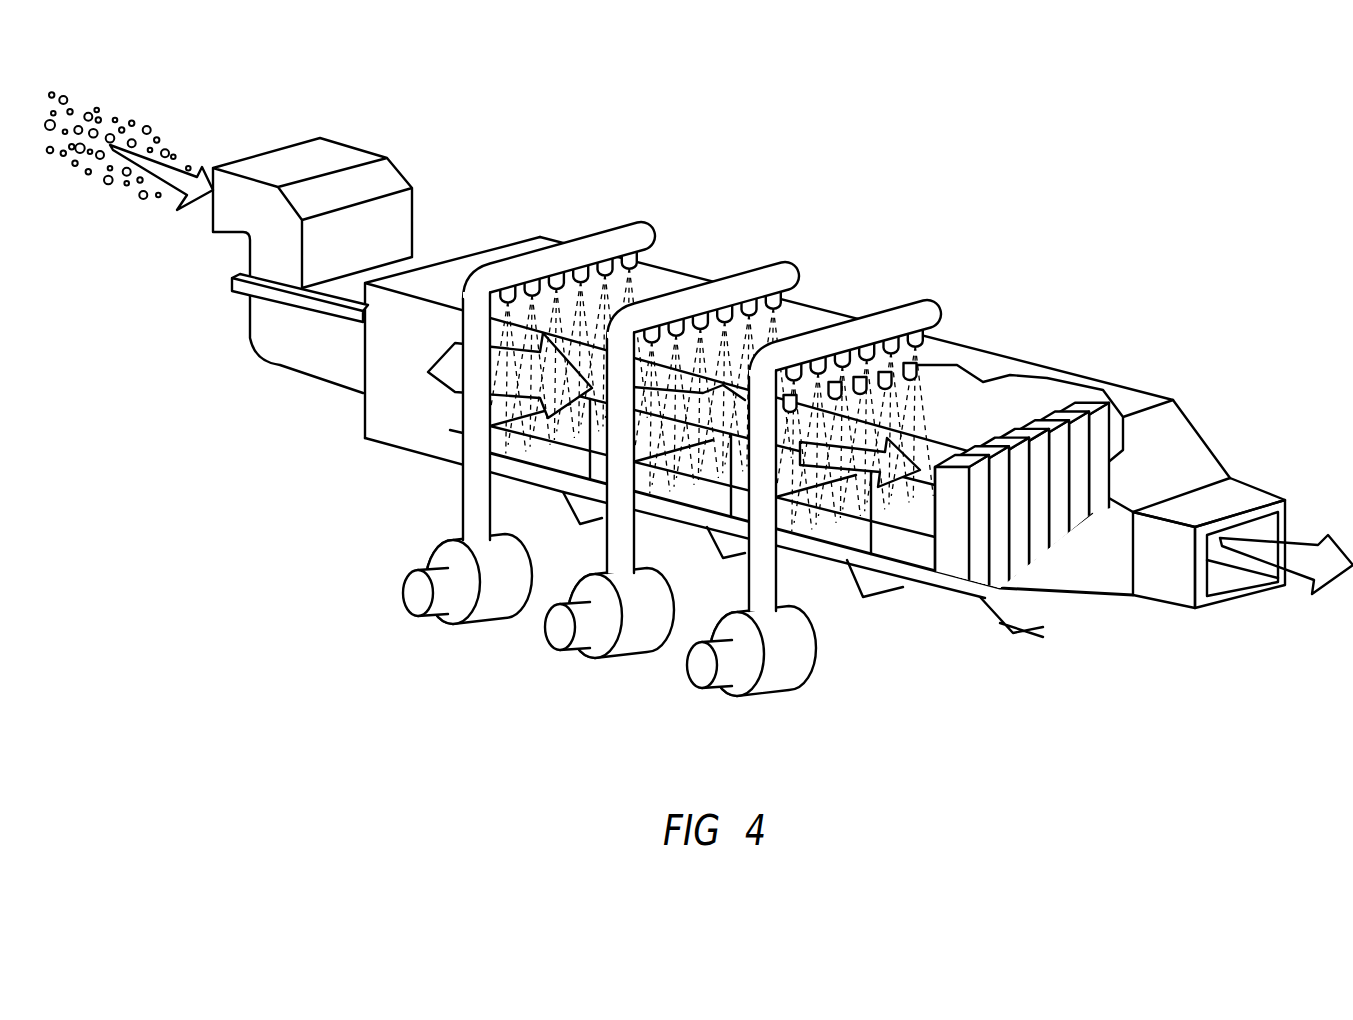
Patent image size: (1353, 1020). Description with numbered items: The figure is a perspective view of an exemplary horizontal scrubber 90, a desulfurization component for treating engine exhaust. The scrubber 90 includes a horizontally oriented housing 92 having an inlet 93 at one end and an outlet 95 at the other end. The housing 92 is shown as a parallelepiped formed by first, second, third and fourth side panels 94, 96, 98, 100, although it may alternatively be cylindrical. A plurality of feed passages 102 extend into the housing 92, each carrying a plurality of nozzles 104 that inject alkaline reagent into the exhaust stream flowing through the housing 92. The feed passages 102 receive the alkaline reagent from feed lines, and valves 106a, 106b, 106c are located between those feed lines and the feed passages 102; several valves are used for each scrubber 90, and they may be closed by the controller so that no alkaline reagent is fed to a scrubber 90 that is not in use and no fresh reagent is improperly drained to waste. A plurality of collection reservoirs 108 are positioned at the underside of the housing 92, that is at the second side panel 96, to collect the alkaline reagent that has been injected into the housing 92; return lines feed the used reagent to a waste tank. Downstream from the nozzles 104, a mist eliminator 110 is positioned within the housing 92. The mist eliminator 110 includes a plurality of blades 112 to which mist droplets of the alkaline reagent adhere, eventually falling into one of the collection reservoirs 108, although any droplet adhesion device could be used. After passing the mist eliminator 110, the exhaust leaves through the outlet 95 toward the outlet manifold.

The horizontal scrubber 90 is at (233, 535).
The housing 92 is at (397, 452).
The inlet 93 is at (343, 155).
The first side panel 94 is at (420, 425).
The outlet 95 is at (1242, 497).
The second side panel 96 is at (370, 440).
The third side panel 98 is at (650, 285).
The fourth side panel 100 is at (780, 310).
The feed passages 102 is at (473, 508).
The nozzles 104 is at (513, 298).
The valve 106a is at (447, 630).
The valve 106b is at (580, 657).
The valve 106c is at (765, 700).
The collection reservoirs 108 is at (560, 508).
The mist eliminator 110 is at (1047, 413).
The blades 112 is at (957, 537).